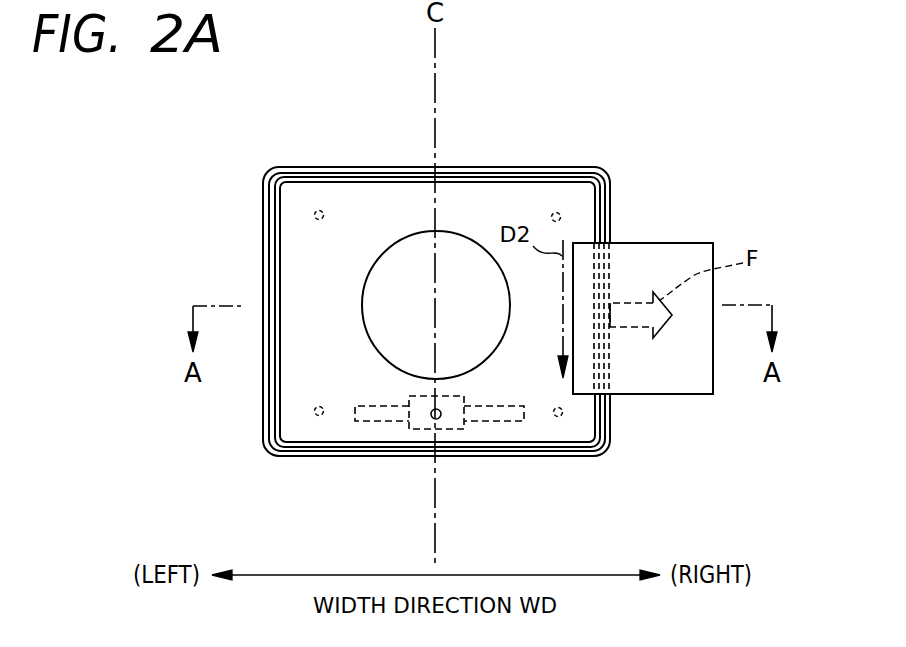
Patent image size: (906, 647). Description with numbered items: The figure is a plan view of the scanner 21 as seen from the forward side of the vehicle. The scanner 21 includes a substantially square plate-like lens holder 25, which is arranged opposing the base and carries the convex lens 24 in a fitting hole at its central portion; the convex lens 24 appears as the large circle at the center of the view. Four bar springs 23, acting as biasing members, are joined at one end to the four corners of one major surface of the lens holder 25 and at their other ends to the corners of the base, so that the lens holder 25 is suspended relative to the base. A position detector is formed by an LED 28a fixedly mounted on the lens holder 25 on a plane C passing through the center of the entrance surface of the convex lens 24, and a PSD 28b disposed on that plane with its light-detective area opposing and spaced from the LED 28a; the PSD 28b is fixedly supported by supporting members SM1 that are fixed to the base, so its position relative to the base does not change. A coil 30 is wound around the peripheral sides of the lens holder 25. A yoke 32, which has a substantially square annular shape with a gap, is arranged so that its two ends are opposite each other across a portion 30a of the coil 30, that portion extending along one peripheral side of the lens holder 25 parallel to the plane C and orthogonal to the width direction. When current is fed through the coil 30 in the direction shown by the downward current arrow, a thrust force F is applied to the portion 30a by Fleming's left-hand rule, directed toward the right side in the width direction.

The scanner 21 is at (503, 251).
The bar springs 23 is at (318, 210).
The convex lens 24 is at (393, 350).
The lens holder 25 is at (368, 195).
The light emitting diode (LED) 28a is at (452, 425).
The position sensitive detector (PSD) 28b is at (415, 430).
The coil 30 is at (578, 166).
The portion of the coil 30a is at (610, 347).
The yoke 32 is at (645, 260).
The supporting members SM1 is at (512, 422).